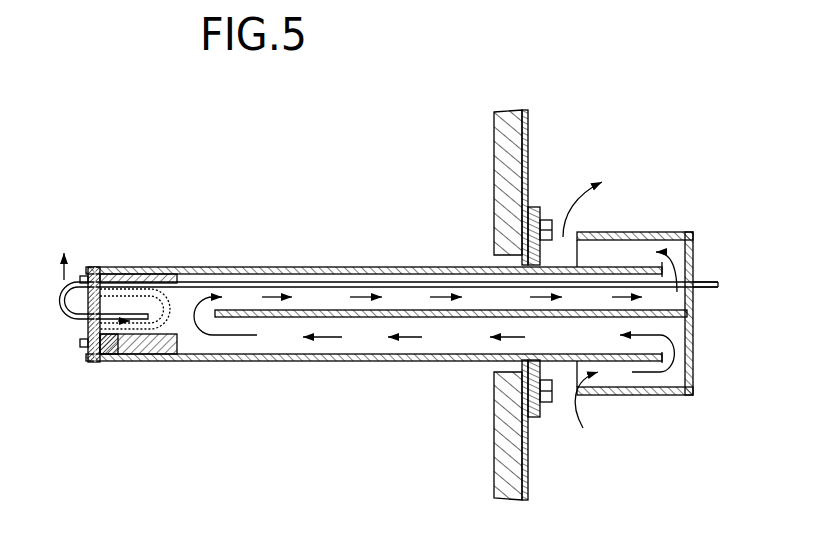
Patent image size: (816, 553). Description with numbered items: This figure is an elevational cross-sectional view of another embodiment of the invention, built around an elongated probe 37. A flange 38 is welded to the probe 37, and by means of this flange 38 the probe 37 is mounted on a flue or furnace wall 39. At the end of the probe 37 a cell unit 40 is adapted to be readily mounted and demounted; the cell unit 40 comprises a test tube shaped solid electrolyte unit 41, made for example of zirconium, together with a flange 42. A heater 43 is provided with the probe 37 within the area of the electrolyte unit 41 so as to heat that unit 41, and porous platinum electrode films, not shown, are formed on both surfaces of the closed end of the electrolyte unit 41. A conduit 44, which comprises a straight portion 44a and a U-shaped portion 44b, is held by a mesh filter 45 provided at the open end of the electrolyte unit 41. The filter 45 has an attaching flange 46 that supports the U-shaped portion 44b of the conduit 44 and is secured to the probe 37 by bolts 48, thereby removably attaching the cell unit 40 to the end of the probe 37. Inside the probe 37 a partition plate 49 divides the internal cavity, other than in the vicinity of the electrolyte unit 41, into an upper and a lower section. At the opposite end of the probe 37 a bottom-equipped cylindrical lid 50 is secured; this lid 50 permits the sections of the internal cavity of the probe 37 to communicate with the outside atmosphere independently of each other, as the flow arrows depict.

The probe 37 is at (400, 266).
The flange 38 is at (540, 212).
The furnace wall 39 is at (494, 172).
The cell unit 40 is at (190, 321).
The solid electrolyte unit 41 is at (170, 328).
The flange 42 is at (122, 358).
The heater 43 is at (157, 274).
The conduit 44 is at (307, 266).
The straight portion 44a is at (712, 280).
The U-shaped portion 44b is at (58, 288).
The mesh filter 45 is at (78, 316).
The attaching flange 46 is at (86, 346).
The bolts 48 is at (86, 270).
The partition plate 49 is at (430, 320).
The cylindrical lid 50 is at (653, 396).